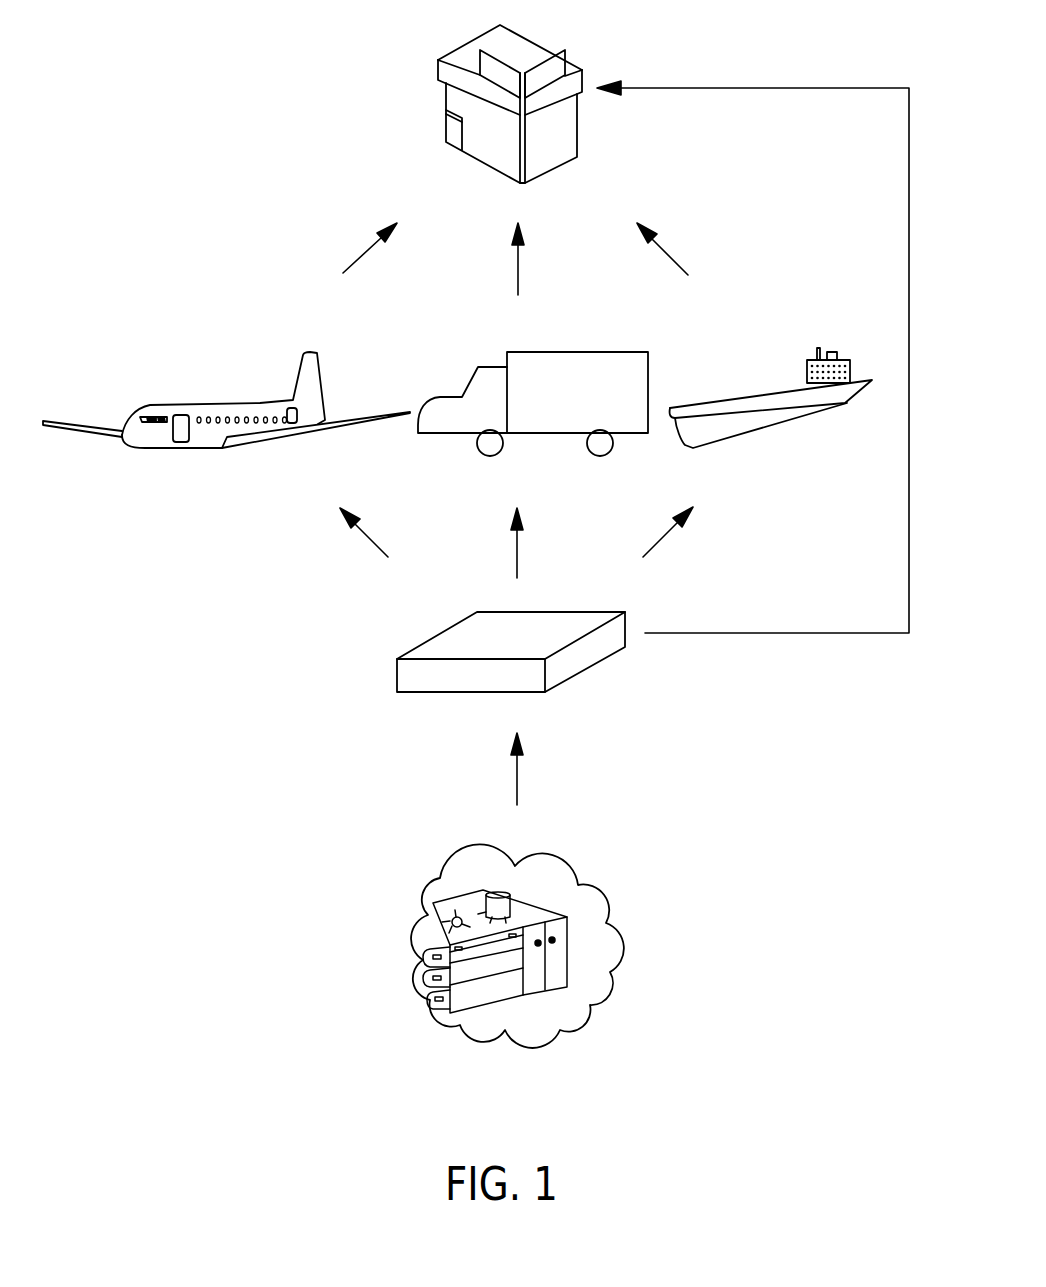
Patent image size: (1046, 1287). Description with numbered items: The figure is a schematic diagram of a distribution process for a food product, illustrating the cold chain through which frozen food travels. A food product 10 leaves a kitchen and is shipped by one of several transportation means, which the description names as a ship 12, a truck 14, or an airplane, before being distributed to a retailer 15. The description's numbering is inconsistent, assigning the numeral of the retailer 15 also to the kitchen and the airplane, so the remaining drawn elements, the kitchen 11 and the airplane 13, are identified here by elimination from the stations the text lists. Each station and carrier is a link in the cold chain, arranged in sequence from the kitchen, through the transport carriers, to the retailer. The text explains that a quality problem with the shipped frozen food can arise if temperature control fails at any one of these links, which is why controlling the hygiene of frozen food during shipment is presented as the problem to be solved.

The food product 10 is at (404, 676).
The customer premises (kitchen) 11 is at (613, 940).
The ship 12 is at (818, 402).
The truck transport 13 is at (637, 362).
The truck 14 is at (180, 410).
The retailer 15 is at (518, 43).